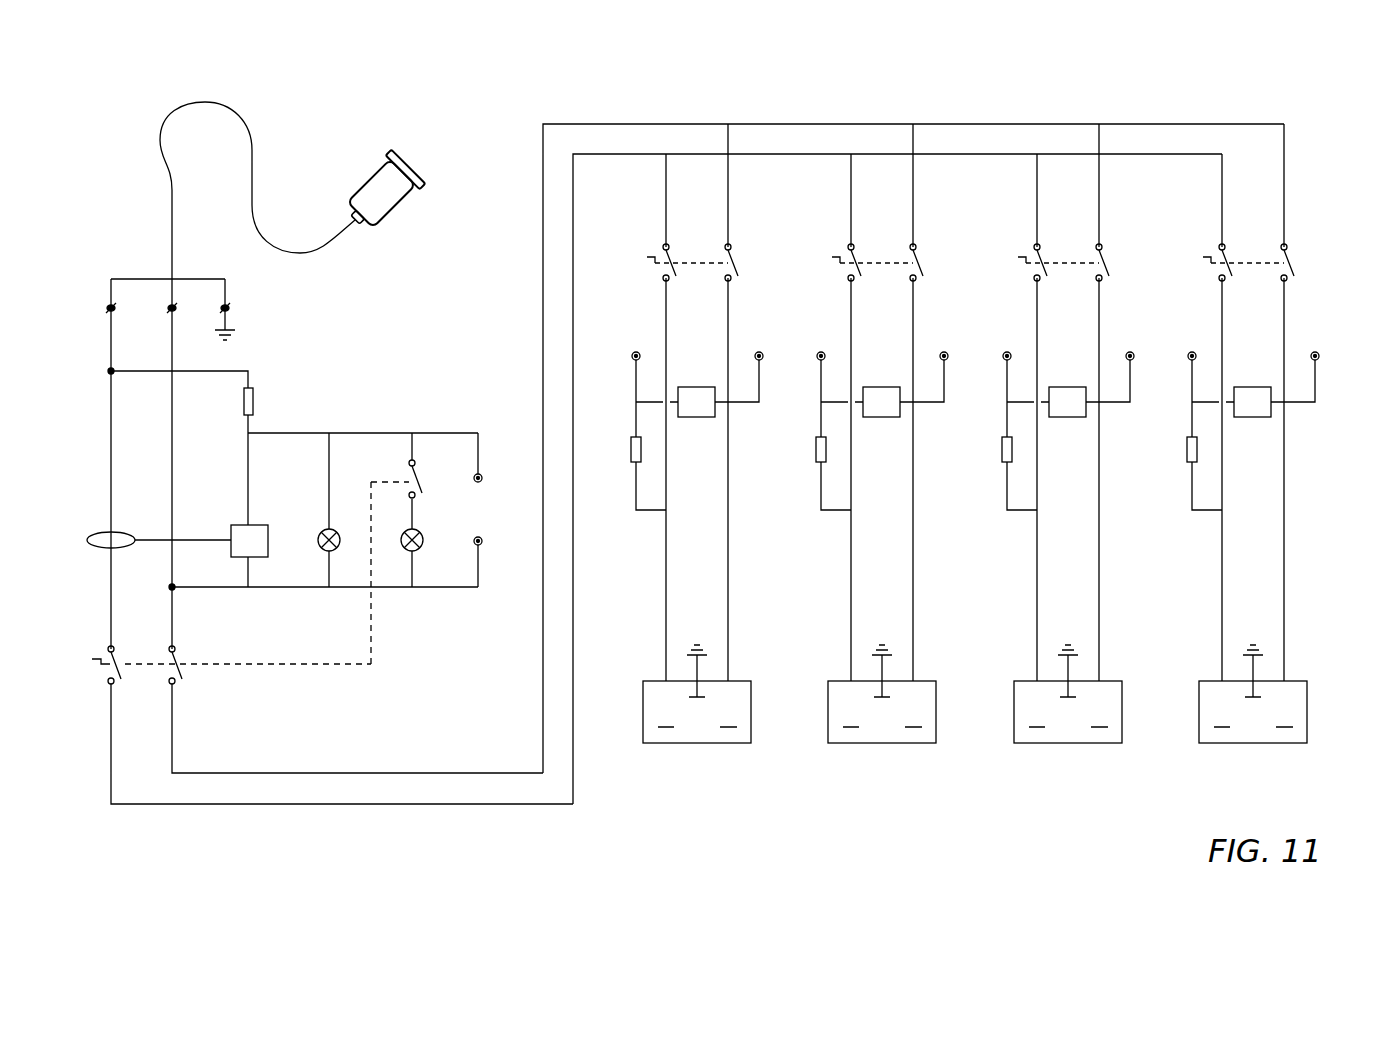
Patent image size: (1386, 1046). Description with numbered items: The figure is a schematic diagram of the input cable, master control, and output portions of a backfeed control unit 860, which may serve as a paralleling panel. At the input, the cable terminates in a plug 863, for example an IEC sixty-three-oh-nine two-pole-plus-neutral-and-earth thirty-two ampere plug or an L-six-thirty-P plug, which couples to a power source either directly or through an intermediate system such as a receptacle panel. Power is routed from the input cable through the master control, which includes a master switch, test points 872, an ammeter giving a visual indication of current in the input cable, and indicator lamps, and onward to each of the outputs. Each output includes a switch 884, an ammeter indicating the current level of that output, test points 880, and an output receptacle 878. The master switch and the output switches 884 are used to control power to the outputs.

The backfeed control unit 860 is at (480, 85).
The plug 863 is at (370, 178).
The test points 872 is at (481, 473).
The output receptacle 878 is at (1307, 718).
The test points 880 is at (1319, 357).
The switch 884 is at (1287, 244).